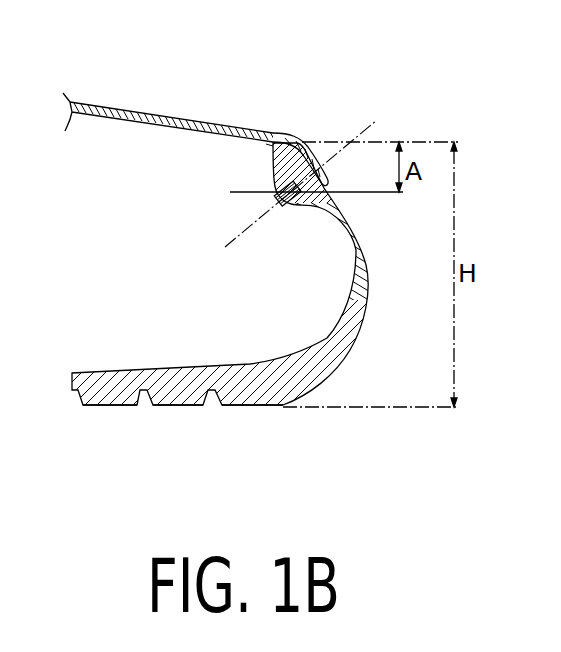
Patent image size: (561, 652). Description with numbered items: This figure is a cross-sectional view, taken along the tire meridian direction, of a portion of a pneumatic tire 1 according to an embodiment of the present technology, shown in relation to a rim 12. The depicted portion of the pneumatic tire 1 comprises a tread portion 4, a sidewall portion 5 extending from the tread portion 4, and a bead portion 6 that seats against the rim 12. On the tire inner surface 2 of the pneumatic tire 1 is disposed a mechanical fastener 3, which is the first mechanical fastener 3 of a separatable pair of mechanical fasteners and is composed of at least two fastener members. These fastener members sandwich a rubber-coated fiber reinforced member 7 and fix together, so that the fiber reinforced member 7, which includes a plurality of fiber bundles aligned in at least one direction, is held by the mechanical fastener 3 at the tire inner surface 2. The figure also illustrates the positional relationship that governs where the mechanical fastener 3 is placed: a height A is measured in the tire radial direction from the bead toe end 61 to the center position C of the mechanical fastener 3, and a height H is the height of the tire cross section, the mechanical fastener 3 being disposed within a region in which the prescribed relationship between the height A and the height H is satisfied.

The pneumatic tire 1 is at (248, 331).
The tire inner surface 2 is at (296, 352).
The mechanical fastener 3 is at (287, 206).
The tread portion 4 is at (245, 404).
The sidewall portion 5 is at (366, 280).
The bead portion 6 is at (318, 136).
The fiber reinforced member 7 is at (306, 200).
The rim 12 is at (147, 112).
The bead toe end 61 is at (258, 151).
The center position C is at (252, 192).